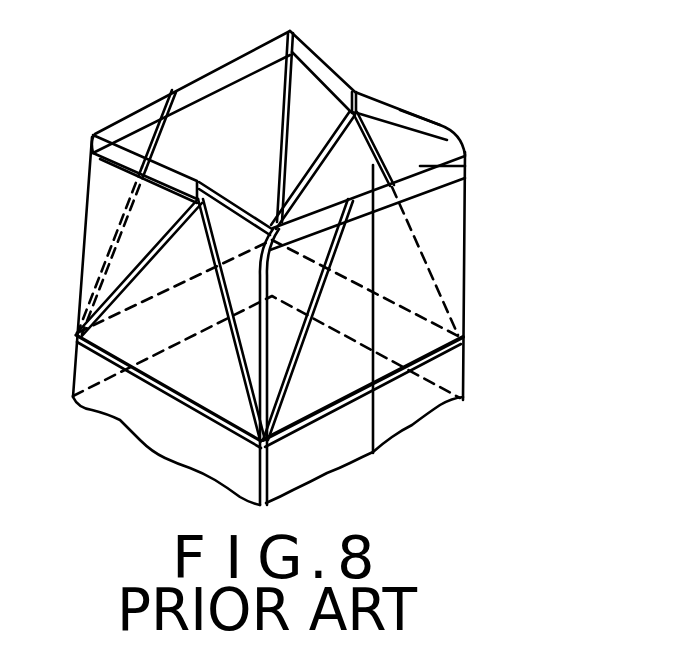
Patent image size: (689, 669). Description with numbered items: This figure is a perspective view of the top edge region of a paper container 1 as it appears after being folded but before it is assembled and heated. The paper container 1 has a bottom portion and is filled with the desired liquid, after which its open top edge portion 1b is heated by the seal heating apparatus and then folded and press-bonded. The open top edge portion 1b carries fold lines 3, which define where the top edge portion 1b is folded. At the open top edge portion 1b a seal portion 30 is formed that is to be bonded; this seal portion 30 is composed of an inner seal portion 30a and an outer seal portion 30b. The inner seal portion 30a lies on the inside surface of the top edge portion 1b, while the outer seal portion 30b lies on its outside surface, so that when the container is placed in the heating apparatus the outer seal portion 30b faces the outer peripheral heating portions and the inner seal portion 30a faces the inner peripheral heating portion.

The paper container 1 is at (427, 388).
The open top edge portion 1b is at (179, 78).
The fold lines 3 is at (342, 127).
The seal portion 30 is at (546, 93).
The inner seal portion 30a is at (443, 128).
The outer seal portion 30b is at (444, 196).